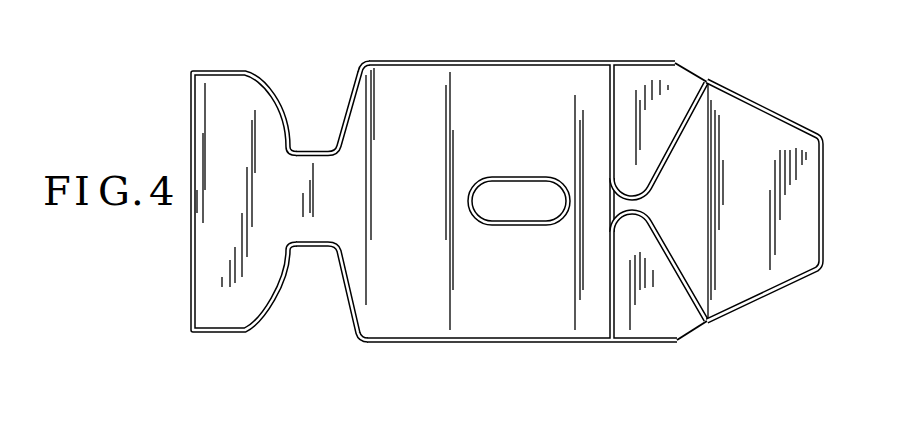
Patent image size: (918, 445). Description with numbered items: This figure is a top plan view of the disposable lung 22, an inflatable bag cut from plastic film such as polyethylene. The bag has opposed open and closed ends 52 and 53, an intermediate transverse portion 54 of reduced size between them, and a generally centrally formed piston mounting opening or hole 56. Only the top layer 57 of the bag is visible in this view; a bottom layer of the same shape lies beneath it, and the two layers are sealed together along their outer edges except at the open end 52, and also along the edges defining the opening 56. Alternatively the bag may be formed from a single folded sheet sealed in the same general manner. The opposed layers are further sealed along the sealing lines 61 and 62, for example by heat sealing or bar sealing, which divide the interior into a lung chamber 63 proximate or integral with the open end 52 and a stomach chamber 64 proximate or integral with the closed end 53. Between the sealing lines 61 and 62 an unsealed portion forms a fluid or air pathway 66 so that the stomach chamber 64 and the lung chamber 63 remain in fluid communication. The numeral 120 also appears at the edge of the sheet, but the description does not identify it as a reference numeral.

The disposable lung 22 is at (421, 60).
The open end 52 is at (194, 123).
The closed end 53 is at (822, 161).
The intermediate transverse portion 54 is at (300, 184).
The piston mounting opening 56 is at (516, 190).
The top layer 57 is at (489, 140).
The sealing line 61 is at (688, 127).
The sealing line 62 is at (690, 290).
The lung chamber 63 is at (422, 270).
The stomach chamber 64 is at (757, 210).
The air pathway 66 is at (638, 200).
The sheet 120 is at (154, 4).